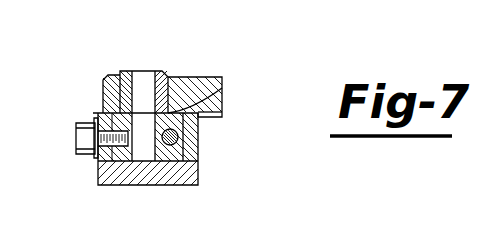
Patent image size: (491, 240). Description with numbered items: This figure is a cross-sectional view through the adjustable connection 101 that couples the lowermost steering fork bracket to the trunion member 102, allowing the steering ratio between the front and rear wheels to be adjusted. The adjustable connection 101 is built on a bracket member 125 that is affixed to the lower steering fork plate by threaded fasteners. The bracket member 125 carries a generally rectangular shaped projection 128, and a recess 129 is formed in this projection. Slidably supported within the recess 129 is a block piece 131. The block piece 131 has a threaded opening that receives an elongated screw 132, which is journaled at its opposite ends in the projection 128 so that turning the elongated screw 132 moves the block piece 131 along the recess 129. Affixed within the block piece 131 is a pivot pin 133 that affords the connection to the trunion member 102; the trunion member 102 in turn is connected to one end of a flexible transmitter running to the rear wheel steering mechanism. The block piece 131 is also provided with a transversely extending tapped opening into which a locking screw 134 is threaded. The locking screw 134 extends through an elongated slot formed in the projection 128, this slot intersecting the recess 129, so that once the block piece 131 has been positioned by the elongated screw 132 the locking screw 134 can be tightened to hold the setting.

The adjustable connection 101 is at (87, 178).
The trunion member 102 is at (188, 80).
The bracket member 125 is at (182, 176).
The rectangular shaped projection 128 is at (189, 124).
The recess 129 is at (194, 99).
The block piece 131 is at (100, 89).
The elongated screw 132 is at (179, 139).
The pivot pin 133 is at (139, 80).
The locking screw 134 is at (76, 128).